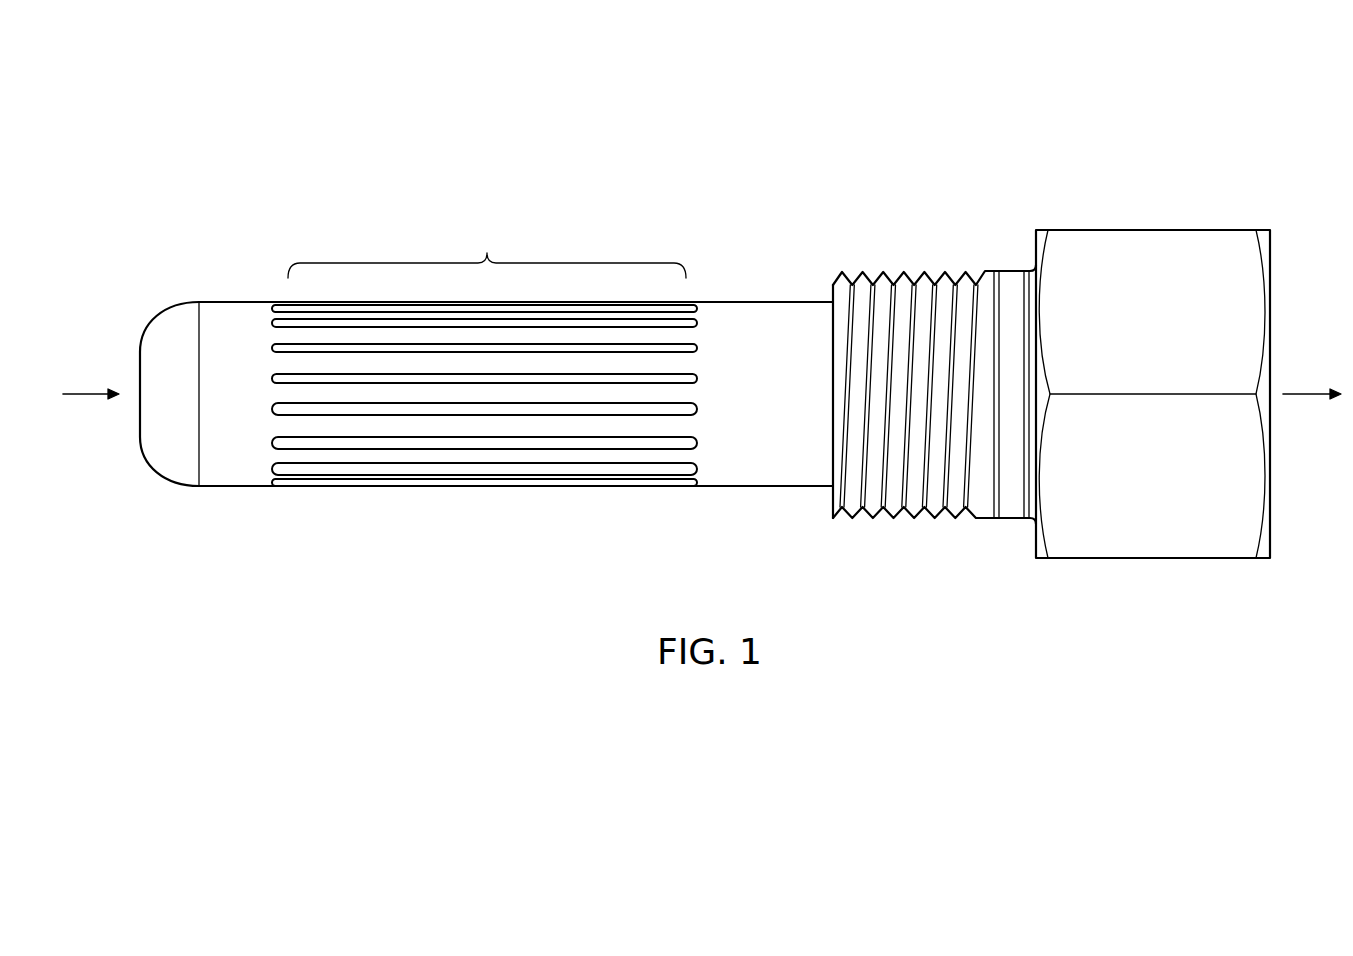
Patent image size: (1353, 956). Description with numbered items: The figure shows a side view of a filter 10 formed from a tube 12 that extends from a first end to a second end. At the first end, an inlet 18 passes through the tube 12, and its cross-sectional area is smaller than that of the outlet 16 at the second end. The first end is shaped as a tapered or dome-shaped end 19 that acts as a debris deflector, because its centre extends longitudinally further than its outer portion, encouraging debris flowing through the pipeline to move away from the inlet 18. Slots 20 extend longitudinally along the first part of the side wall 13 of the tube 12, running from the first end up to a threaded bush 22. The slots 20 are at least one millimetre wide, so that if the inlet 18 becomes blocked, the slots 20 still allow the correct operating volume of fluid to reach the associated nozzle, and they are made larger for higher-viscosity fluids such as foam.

The filter 10 is at (937, 161).
The tube 12 is at (762, 301).
The side wall 13 is at (487, 254).
The outlet 16 is at (1272, 424).
The inlet 18 is at (140, 418).
The tapered or dome-shaped end 19 is at (160, 473).
The slots 20 is at (512, 407).
The threaded bush 22 is at (894, 519).